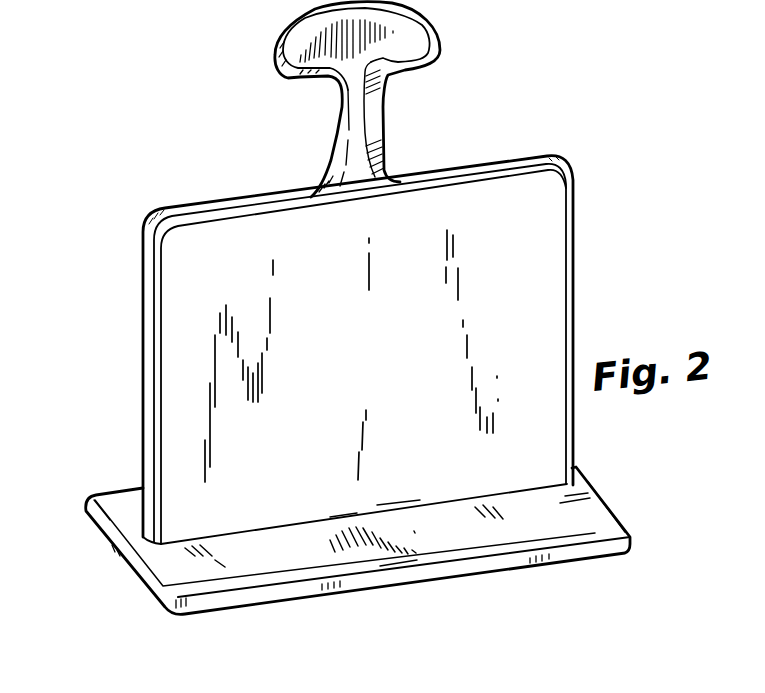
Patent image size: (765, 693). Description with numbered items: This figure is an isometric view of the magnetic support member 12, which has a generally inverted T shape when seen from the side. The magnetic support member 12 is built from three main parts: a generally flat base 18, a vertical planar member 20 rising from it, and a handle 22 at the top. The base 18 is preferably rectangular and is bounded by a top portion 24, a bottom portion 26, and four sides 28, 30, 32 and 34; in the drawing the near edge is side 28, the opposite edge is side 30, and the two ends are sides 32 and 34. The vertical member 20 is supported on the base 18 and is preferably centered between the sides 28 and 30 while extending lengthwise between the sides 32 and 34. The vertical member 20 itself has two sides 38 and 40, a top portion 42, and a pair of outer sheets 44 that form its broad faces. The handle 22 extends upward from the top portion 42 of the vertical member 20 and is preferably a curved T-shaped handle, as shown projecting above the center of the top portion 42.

The magnetic support member 12 is at (538, 119).
The base 18 is at (164, 569).
The vertical planar member 20 is at (193, 228).
The handle 22 is at (401, 67).
The top portion 24 is at (563, 520).
The bottom portion 26 is at (437, 582).
The side 28 is at (117, 480).
The side 30 is at (507, 557).
The side 32 is at (115, 538).
The side 34 is at (630, 536).
The side 38 is at (144, 341).
The side 40 is at (598, 287).
The top portion 42 is at (253, 197).
The outer sheets 44 is at (142, 284).